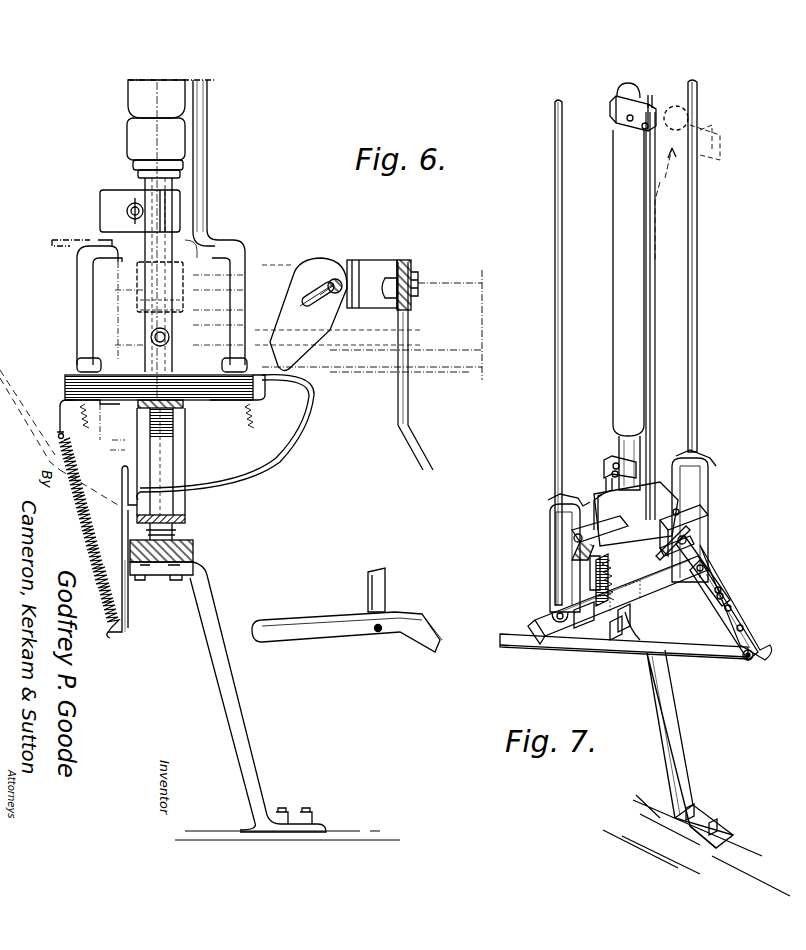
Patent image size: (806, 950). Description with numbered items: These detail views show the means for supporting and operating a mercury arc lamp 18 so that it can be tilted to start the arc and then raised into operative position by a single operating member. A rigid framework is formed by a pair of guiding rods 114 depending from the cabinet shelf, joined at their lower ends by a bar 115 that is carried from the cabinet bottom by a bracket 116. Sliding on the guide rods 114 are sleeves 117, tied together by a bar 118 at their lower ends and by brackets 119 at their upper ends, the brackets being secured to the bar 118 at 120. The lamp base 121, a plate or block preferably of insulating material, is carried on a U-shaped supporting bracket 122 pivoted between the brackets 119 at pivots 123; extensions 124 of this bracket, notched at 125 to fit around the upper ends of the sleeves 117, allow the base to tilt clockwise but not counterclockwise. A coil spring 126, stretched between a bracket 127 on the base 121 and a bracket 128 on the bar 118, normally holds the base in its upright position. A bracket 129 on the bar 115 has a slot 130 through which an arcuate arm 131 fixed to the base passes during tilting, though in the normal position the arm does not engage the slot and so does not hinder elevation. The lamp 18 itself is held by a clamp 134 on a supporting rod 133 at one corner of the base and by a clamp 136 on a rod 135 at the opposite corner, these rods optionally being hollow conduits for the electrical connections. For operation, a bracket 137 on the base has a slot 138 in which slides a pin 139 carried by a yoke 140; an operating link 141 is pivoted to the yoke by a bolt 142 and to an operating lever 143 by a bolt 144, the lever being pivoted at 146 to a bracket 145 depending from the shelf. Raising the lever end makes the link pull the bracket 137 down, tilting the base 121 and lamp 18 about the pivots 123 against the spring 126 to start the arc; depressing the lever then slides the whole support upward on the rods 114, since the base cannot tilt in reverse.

In FIG. 6, the lamp 18 is at (126, 100).
In FIG. 7, the lamp 18 is at (612, 190).
In FIG. 6, the guiding rods 114 is at (208, 143).
In FIG. 7, the guiding rods 114 is at (555, 408).
In FIG. 6, the bar 115 is at (196, 552).
In FIG. 7, the bar 115 is at (712, 562).
In FIG. 6, the bracket 116 is at (237, 730).
In FIG. 7, the bracket 116 is at (683, 752).
In FIG. 7, the sleeves 117 is at (558, 553).
In FIG. 6, the bar 118 is at (186, 518).
In FIG. 7, the bar 118 is at (656, 568).
In FIG. 7, the brackets 119 is at (580, 566).
In FIG. 7, the securing point 120 is at (574, 606).
In FIG. 6, the lamp base 121 is at (60, 402).
In FIG. 6, the U-shaped supporting bracket 122 is at (178, 304).
In FIG. 7, the U-shaped supporting bracket 122 is at (580, 582).
In FIG. 7, the pivots 123 is at (572, 538).
In FIG. 7, the extensions 124 is at (596, 500).
In FIG. 7, the notches 125 is at (552, 515).
In FIG. 6, the coil spring 126 is at (80, 470).
In FIG. 7, the coil spring 126 is at (618, 640).
In FIG. 7, the bracket 127 is at (790, 385).
In FIG. 6, the bracket 128 is at (128, 628).
In FIG. 7, the bracket 128 is at (624, 650).
In FIG. 6, the bracket 129 is at (122, 500).
In FIG. 6, the slot 130 is at (122, 484).
In FIG. 6, the arcuate arm 131 is at (300, 428).
In FIG. 6, the supporting rod 133 is at (77, 283).
In FIG. 7, the supporting rod 133 is at (608, 476).
In FIG. 6, the clamp 134 is at (100, 203).
In FIG. 7, the clamp 134 is at (606, 462).
In FIG. 6, the rod 135 is at (202, 244).
In FIG. 7, the rod 135 is at (656, 340).
In FIG. 7, the clamp 136 is at (612, 118).
In FIG. 6, the bracket 137 is at (44, 447).
In FIG. 7, the bracket 137 is at (552, 617).
In FIG. 6, the slot 138 is at (318, 300).
In FIG. 6, the pin 139 is at (337, 283).
In FIG. 7, the pin 139 is at (680, 516).
In FIG. 6, the yoke 140 is at (365, 275).
In FIG. 6, the operating link 141 is at (412, 412).
In FIG. 7, the operating link 141 is at (745, 632).
In FIG. 6, the bolt 142 is at (408, 268).
In FIG. 7, the bolt 142 is at (686, 536).
In FIG. 7, the operating lever 143 is at (712, 652).
In FIG. 7, the bolt 144 is at (752, 658).
In FIG. 6, the bracket 145 is at (388, 590).
In FIG. 6, the pivot 146 is at (378, 632).